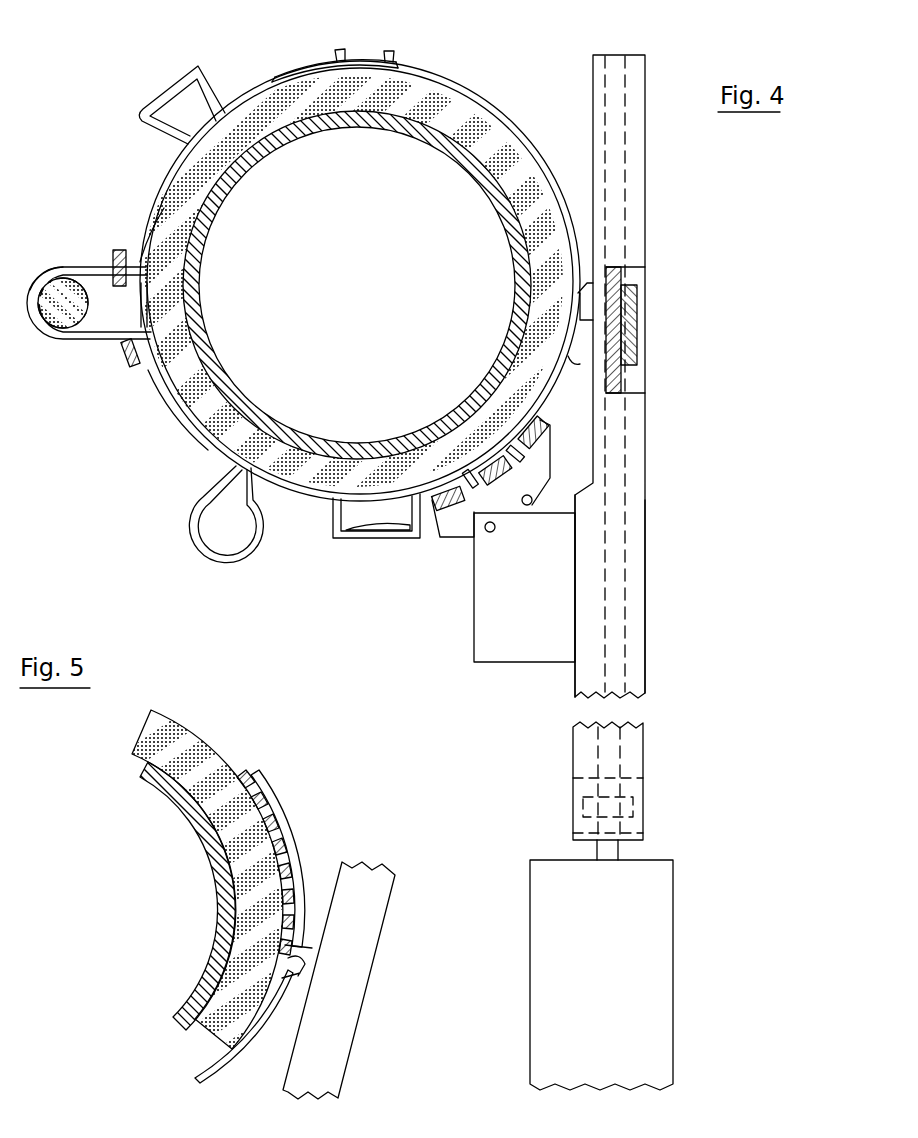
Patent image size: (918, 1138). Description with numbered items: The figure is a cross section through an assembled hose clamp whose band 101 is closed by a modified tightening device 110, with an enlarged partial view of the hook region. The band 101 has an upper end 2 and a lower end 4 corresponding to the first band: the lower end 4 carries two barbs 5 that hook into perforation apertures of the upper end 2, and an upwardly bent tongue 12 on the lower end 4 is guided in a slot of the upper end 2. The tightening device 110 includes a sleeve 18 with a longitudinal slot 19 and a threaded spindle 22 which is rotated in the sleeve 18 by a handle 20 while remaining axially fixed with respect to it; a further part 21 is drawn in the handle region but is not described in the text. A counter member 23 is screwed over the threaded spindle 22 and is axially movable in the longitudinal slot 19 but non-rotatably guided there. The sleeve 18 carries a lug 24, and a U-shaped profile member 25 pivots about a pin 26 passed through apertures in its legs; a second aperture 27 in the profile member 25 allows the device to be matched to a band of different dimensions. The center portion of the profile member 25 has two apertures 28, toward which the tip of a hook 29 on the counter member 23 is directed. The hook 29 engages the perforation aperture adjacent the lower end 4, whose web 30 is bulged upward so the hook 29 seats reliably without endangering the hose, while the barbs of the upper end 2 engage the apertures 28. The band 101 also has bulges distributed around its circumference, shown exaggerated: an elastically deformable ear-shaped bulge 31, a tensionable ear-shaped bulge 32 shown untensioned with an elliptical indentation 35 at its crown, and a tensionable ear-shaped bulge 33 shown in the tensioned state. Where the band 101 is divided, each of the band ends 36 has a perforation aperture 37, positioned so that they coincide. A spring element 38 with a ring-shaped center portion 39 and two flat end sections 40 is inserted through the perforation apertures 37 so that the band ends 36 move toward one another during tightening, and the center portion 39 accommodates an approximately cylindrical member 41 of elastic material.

In FIG. 4, the upper end 2 is at (432, 72).
In FIG. 5, the upper end 2 is at (271, 858).
In FIG. 4, the lower end 4 is at (548, 188).
In FIG. 5, the lower end 4 is at (257, 829).
In FIG. 4, the barbs 5 is at (342, 50).
In FIG. 4, the tongue 12 is at (585, 368).
In FIG. 4, the sleeve 18 is at (635, 445).
In FIG. 5, the sleeve 18 is at (365, 928).
In FIG. 4, the longitudinal slot 19 is at (595, 105).
In FIG. 4, the handle 20 is at (660, 967).
In FIG. 4, the fastening element 21 is at (635, 805).
In FIG. 4, the threaded spindle 22 is at (615, 525).
In FIG. 4, the counter member 23 is at (628, 287).
In FIG. 4, the lug 24 is at (492, 623).
In FIG. 4, the U-shaped profile member 25 is at (452, 518).
In FIG. 4, the pin 26 is at (489, 533).
In FIG. 4, the second aperture 27 is at (532, 496).
In FIG. 4, the apertures 28 is at (548, 437).
In FIG. 5, the hook 29 is at (302, 940).
In FIG. 5, the web 30 is at (290, 1000).
In FIG. 4, the ear-shaped bulge 31 is at (238, 560).
In FIG. 4, the ear-shaped bulge 32 is at (367, 545).
In FIG. 4, the ear-shaped bulge 33 is at (240, 48).
In FIG. 4, the indentation 35 is at (340, 520).
In FIG. 4, the band ends 36 is at (114, 256).
In FIG. 4, the perforation apertures 37 is at (134, 306).
In FIG. 4, the spring element 38 is at (78, 346).
In FIG. 4, the ring-shaped center portion 39 is at (36, 290).
In FIG. 4, the flat end sections 40 is at (130, 228).
In FIG. 4, the cylindrical member 41 is at (48, 322).
In FIG. 4, the band 101 is at (170, 420).
In FIG. 4, the tightening device 110 is at (638, 602).